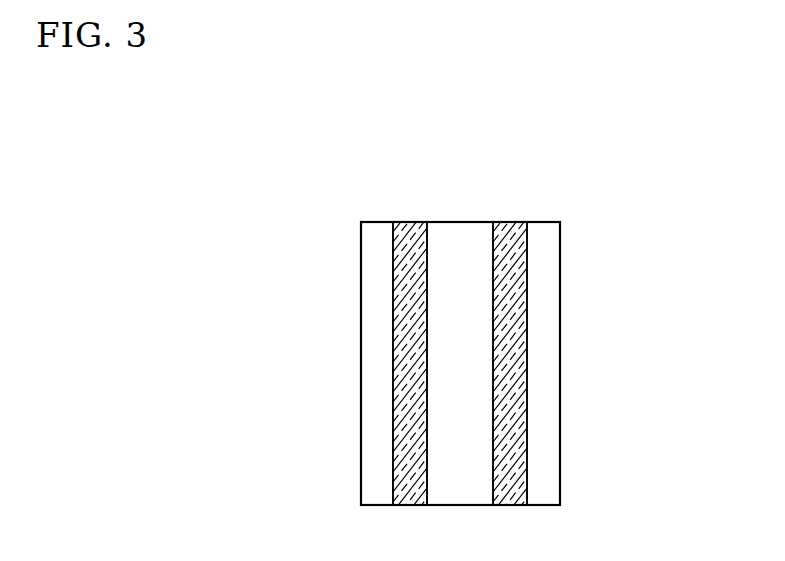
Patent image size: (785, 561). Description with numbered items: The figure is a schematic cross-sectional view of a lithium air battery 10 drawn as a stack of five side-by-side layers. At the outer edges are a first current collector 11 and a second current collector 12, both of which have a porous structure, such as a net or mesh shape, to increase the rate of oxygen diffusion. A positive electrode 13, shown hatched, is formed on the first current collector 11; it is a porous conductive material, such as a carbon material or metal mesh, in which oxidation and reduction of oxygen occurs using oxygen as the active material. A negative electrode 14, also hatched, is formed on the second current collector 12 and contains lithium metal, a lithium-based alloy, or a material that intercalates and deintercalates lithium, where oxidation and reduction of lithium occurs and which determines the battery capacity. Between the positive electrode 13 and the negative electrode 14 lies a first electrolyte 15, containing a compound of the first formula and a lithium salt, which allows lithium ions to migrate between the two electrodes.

The lithium air battery 10 is at (592, 177).
The first current collector 11 is at (374, 237).
The second current collector 12 is at (545, 237).
The positive electrode 13 is at (409, 237).
The negative electrode 14 is at (509, 237).
The first electrolyte 15 is at (464, 237).